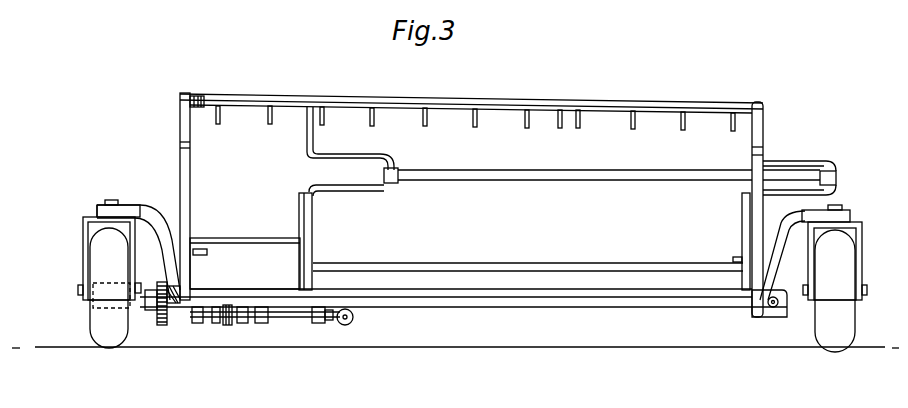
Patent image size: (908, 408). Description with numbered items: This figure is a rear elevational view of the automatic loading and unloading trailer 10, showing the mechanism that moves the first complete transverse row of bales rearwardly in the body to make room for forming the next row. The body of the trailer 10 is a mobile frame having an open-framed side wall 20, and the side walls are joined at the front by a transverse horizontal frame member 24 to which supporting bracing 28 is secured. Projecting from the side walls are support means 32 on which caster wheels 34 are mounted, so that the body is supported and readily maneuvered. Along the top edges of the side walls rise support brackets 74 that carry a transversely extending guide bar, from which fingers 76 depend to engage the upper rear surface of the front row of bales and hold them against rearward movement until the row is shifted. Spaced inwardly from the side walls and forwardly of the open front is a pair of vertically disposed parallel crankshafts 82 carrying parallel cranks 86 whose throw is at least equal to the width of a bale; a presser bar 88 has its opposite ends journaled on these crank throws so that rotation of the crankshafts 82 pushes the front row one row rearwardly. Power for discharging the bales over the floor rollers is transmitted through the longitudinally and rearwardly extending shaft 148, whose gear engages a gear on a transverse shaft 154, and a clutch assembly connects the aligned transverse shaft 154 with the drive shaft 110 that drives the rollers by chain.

The automatic loading and unloading trailer 10 is at (123, 188).
The side wall 20 is at (760, 128).
The transverse horizontal frame member 24 is at (305, 95).
The supporting bracing 28 is at (183, 168).
The support means 32 is at (142, 212).
The caster wheel 34 is at (112, 249).
The support bracket 74 is at (561, 128).
The finger 76 is at (682, 118).
The crankshaft 82 is at (310, 213).
The crank 86 is at (203, 97).
The presser bar 88 is at (610, 172).
The drive shaft 110 is at (176, 312).
The longitudinally extending shaft 148 is at (354, 320).
The transverse shaft 154 is at (285, 313).